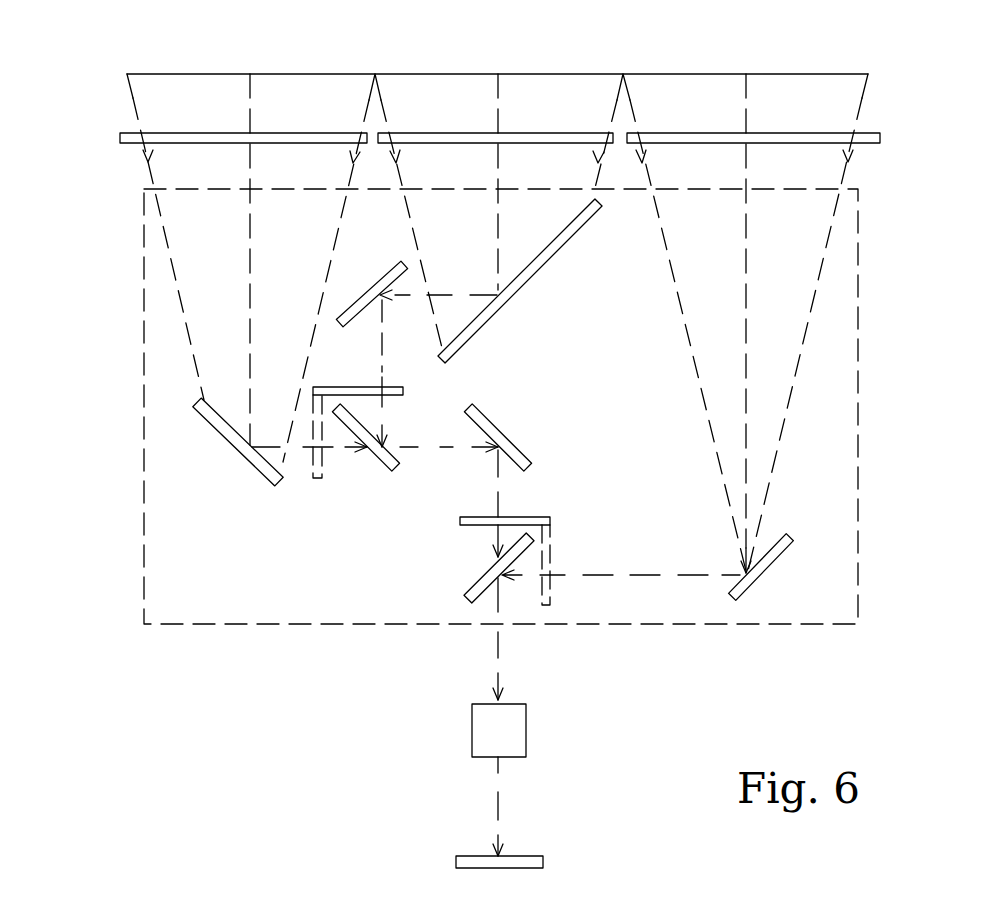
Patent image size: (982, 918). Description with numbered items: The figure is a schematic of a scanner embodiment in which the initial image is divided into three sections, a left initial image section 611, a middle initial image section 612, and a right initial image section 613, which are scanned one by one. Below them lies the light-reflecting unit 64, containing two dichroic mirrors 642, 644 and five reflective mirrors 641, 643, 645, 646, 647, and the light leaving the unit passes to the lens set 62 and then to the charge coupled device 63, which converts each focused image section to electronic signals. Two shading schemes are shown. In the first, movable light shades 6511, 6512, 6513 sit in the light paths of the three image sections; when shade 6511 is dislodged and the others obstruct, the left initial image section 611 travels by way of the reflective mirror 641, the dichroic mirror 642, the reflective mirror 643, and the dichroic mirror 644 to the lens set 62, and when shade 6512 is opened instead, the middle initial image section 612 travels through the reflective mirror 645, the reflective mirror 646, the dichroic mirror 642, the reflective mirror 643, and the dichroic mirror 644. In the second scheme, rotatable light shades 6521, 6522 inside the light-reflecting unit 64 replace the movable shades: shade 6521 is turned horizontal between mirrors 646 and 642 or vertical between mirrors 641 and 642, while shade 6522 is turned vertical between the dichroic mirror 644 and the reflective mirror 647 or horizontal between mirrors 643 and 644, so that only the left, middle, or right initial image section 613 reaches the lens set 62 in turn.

The left initial image section 611 is at (223, 74).
The middle initial image section 612 is at (470, 74).
The right initial image section 613 is at (720, 74).
The movable light shade 6511 is at (267, 135).
The movable light shade 6512 is at (542, 108).
The movable light shade 6513 is at (790, 108).
The light-reflecting unit 64 is at (843, 353).
The reflective mirror 641 is at (233, 440).
The dichroic mirror 642 is at (397, 468).
The reflective mirror 643 is at (507, 440).
The dichroic mirror 644 is at (482, 580).
The reflective mirror 645 is at (517, 287).
The reflective mirror 646 is at (380, 287).
The reflective mirror 647 is at (763, 565).
The rotatable light shade 6521 is at (402, 392).
The rotatable light shade 6522 is at (540, 517).
The lens set 62 is at (513, 722).
The charge coupled device 63 is at (523, 858).